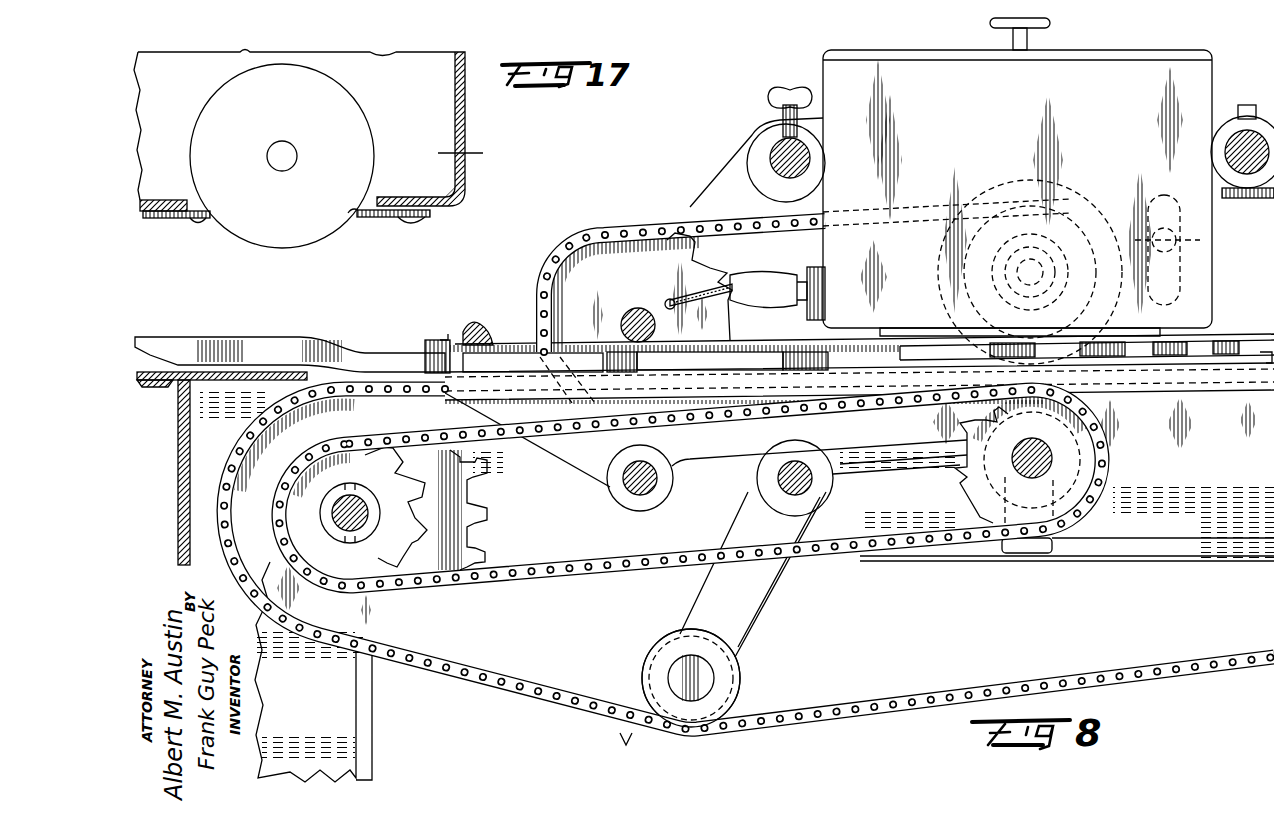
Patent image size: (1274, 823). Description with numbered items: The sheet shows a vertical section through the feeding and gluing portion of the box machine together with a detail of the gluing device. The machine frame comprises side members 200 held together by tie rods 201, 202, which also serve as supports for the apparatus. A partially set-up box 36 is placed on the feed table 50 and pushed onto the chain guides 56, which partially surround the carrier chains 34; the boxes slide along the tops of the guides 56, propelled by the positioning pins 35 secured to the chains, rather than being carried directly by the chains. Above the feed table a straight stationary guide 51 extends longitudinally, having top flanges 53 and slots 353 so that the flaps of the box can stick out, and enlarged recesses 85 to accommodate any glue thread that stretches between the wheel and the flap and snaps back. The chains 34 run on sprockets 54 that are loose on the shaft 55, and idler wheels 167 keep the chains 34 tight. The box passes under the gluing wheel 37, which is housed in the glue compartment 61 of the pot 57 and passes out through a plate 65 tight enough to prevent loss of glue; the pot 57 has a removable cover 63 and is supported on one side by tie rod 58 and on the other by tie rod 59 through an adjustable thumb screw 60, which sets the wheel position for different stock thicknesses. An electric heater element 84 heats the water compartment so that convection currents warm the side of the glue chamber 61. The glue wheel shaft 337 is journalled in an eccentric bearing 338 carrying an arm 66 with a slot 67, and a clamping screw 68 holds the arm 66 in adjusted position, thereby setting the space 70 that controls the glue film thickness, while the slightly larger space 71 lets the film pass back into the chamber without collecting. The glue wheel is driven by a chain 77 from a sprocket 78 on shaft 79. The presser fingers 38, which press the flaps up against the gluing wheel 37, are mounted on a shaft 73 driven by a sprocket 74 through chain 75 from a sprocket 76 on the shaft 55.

In FIG. 8, the carrier chains 34 is at (878, 700).
In FIG. 8, the positioning pins 35 is at (622, 740).
In FIG. 8, the partially set-up box 36 is at (490, 340).
In FIG. 17, the gluing wheel 37 is at (352, 112).
In FIG. 8, the gluing wheel 37 is at (935, 296).
In FIG. 8, the presser fingers 38 is at (1020, 553).
In FIG. 8, the feed table 50 is at (197, 368).
In FIG. 8, the straight stationary guide 51 is at (232, 345).
In FIG. 8, the top flanges 53 is at (514, 347).
In FIG. 8, the sprockets 54 is at (468, 535).
In FIG. 8, the shaft 55 is at (360, 503).
In FIG. 8, the chain guides 56 is at (1227, 378).
In FIG. 17, the pot 57 is at (466, 129).
In FIG. 8, the pot 57 is at (1192, 80).
In FIG. 8, the tie rod 58 is at (1240, 172).
In FIG. 8, the tie rod 59 is at (776, 180).
In FIG. 8, the adjustable thumb screw 60 is at (770, 100).
In FIG. 17, the glue compartment 61 is at (475, 155).
In FIG. 8, the removable cover 63 is at (1095, 52).
In FIG. 17, the plate 65 is at (395, 222).
In FIG. 8, the plate 65 is at (930, 324).
In FIG. 8, the arm 66 is at (1106, 210).
In FIG. 8, the slot 67 is at (1205, 270).
In FIG. 8, the clamping screw 68 is at (1212, 250).
In FIG. 17, the space 70 is at (202, 218).
In FIG. 17, the space 71 is at (349, 216).
In FIG. 8, the shaft 73 is at (1015, 465).
In FIG. 8, the sprocket 74 is at (993, 498).
In FIG. 8, the chain 75 is at (900, 556).
In FIG. 8, the sprocket 76 is at (398, 547).
In FIG. 8, the chain 77 is at (666, 222).
In FIG. 8, the sprocket 78 is at (697, 267).
In FIG. 8, the shaft 79 is at (644, 314).
In FIG. 8, the electric heater element 84 is at (772, 288).
In FIG. 8, the enlarged recesses 85 is at (1125, 355).
In FIG. 8, the idler wheels 167 is at (660, 656).
In FIG. 8, the side members 200 is at (1162, 560).
In FIG. 8, the tie rod 201 is at (626, 486).
In FIG. 8, the tie rod 202 is at (815, 488).
In FIG. 8, the glue wheel shaft 337 is at (1020, 252).
In FIG. 8, the eccentric bearing 338 is at (1013, 292).
In FIG. 8, the slots 353 is at (388, 372).